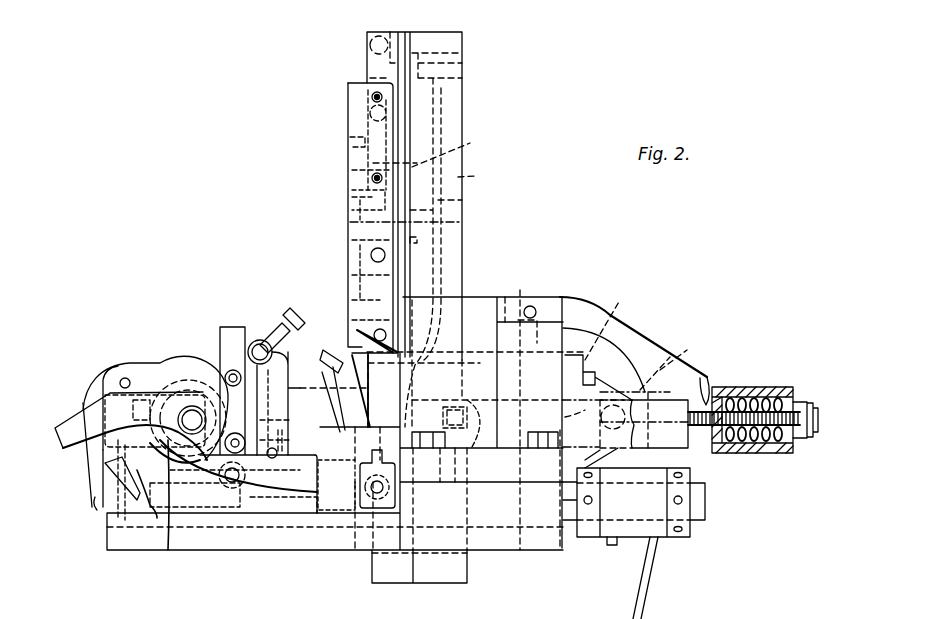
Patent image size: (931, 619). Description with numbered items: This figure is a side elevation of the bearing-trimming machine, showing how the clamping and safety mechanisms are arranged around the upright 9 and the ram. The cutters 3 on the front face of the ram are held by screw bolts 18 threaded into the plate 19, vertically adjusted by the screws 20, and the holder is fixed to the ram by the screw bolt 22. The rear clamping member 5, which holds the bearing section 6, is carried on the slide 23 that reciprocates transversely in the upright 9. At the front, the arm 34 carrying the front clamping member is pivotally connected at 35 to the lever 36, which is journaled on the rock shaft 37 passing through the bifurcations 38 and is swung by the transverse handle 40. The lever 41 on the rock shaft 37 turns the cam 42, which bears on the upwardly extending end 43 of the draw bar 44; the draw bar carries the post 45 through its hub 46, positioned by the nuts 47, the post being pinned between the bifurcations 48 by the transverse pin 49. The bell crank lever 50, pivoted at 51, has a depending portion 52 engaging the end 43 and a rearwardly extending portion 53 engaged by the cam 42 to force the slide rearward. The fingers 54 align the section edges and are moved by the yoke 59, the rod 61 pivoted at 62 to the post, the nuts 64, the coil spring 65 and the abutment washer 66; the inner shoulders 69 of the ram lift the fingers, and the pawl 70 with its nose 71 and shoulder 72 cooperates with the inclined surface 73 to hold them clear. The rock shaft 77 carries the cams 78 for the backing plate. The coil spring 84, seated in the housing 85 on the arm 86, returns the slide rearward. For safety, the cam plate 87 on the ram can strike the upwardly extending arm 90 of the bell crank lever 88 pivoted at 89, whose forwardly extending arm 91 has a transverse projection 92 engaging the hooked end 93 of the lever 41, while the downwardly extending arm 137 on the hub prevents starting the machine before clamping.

The cutters 3 is at (350, 262).
The rear clamping member 5 is at (346, 230).
The section of the bearing 6 is at (545, 290).
The upright 9 is at (476, 305).
The screw bolts 18 is at (346, 202).
The plate 19 is at (458, 200).
The screws 20 is at (346, 150).
The screw bolt 22 is at (435, 157).
The slide 23 is at (590, 310).
The arm 34 is at (290, 378).
The pivotal connection 35 is at (273, 352).
The lever 36 is at (275, 322).
The rock shaft 37 is at (185, 410).
The bifurcations 38 is at (197, 353).
The transverse handle 40 is at (297, 320).
The lever 41 is at (78, 450).
The cam 42 is at (137, 520).
The upwardly extending end of the draw bar 43 is at (96, 512).
The draw bar 44 is at (246, 530).
The post 45 is at (650, 452).
The hub 46 is at (620, 540).
The nuts 47 is at (588, 540).
The bifurcations 48 is at (640, 350).
The transverse pin 49 is at (676, 362).
The bell crank lever 50 is at (100, 382).
The pivot 51 is at (125, 378).
The depending portion 52 is at (95, 487).
The rearwardly extending portion 53 is at (216, 378).
The fingers 54 is at (400, 407).
The yoke 59 is at (692, 436).
The rod 61 is at (735, 403).
The pivotal connection 62 is at (632, 410).
The nuts 64 is at (803, 402).
The coil spring 65 is at (783, 453).
The abutment washer 66 is at (797, 440).
The inner shoulders 69 is at (442, 275).
The pawl 70 is at (624, 330).
The nose 71 is at (737, 387).
The shoulder 72 is at (702, 370).
The upper inclined surface 73 is at (595, 377).
The rock shaft 77 is at (233, 487).
The cams 78 is at (222, 530).
The coil spring 84 is at (760, 387).
The housing 85 is at (762, 453).
The arm 86 is at (567, 412).
The cam plate 87 is at (352, 103).
The bell crank lever 88 is at (287, 503).
The pivot 89 is at (373, 490).
The upwardly extending arm 90 is at (368, 372).
The forwardly extending arm 91 is at (168, 545).
The transverse projection 92 is at (222, 461).
The hooked end 93 is at (153, 495).
The downwardly extending arm 137 is at (660, 597).